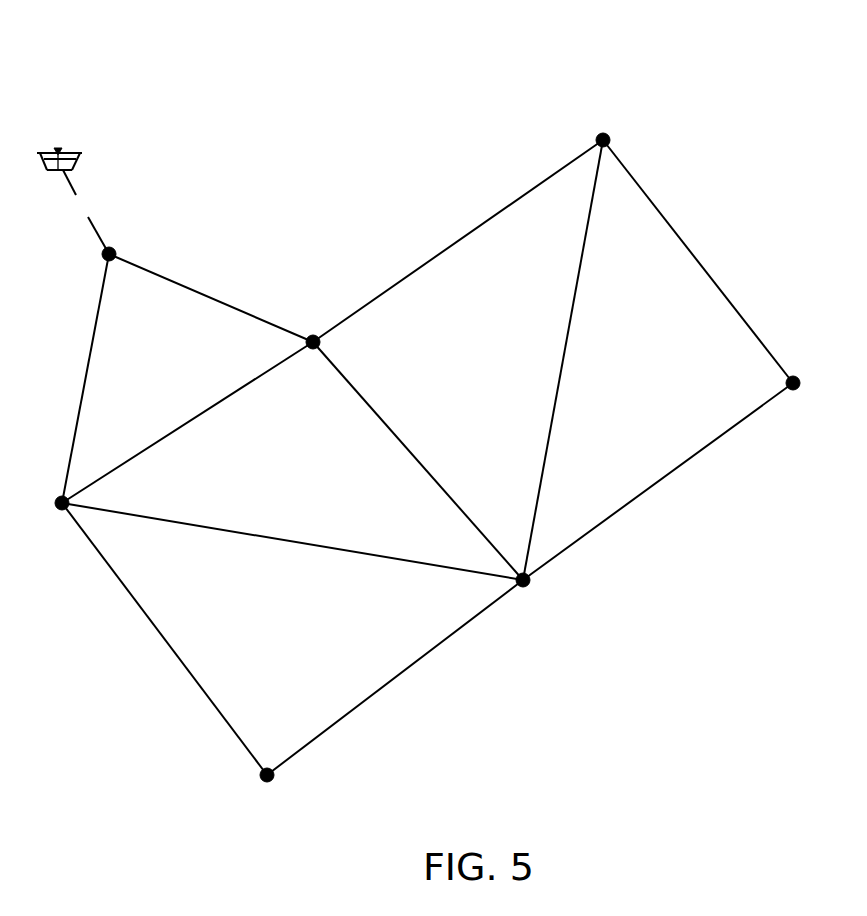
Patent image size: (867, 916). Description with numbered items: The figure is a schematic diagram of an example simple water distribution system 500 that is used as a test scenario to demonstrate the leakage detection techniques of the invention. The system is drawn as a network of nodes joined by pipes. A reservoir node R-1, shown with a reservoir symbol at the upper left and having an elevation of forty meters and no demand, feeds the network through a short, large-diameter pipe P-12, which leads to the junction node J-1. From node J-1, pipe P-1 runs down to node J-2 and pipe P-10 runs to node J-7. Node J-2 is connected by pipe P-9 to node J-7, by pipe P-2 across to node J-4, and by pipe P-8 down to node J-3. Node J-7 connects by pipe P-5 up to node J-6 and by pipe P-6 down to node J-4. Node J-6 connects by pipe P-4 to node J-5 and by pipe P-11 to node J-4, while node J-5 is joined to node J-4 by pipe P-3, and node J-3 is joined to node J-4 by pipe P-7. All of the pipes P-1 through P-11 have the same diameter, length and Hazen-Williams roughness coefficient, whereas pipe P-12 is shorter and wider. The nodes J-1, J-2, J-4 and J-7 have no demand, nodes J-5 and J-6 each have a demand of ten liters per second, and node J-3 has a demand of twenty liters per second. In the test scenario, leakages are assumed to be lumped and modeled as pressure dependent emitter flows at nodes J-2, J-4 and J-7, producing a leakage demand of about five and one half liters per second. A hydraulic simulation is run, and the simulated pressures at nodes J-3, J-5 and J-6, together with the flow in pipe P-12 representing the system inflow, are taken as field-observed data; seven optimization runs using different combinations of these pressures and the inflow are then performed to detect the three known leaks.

The water distribution system 500 is at (615, 58).
The reservoir node R-1 is at (65, 145).
The node J-1 is at (129, 243).
The node J-2 is at (50, 519).
The node J-3 is at (285, 781).
The node J-4 is at (538, 591).
The node J-5 is at (803, 398).
The node J-6 is at (601, 127).
The node J-7 is at (316, 326).
The pipe P-1 is at (85, 378).
The pipe P-2 is at (292, 541).
The pipe P-3 is at (658, 481).
The pipe P-4 is at (698, 261).
The pipe P-5 is at (458, 241).
The pipe P-6 is at (418, 461).
The pipe P-7 is at (395, 677).
The pipe P-8 is at (164, 639).
The pipe P-9 is at (187, 422).
The pipe P-10 is at (211, 298).
The pipe P-11 is at (563, 360).
The pipe P-12 is at (86, 212).